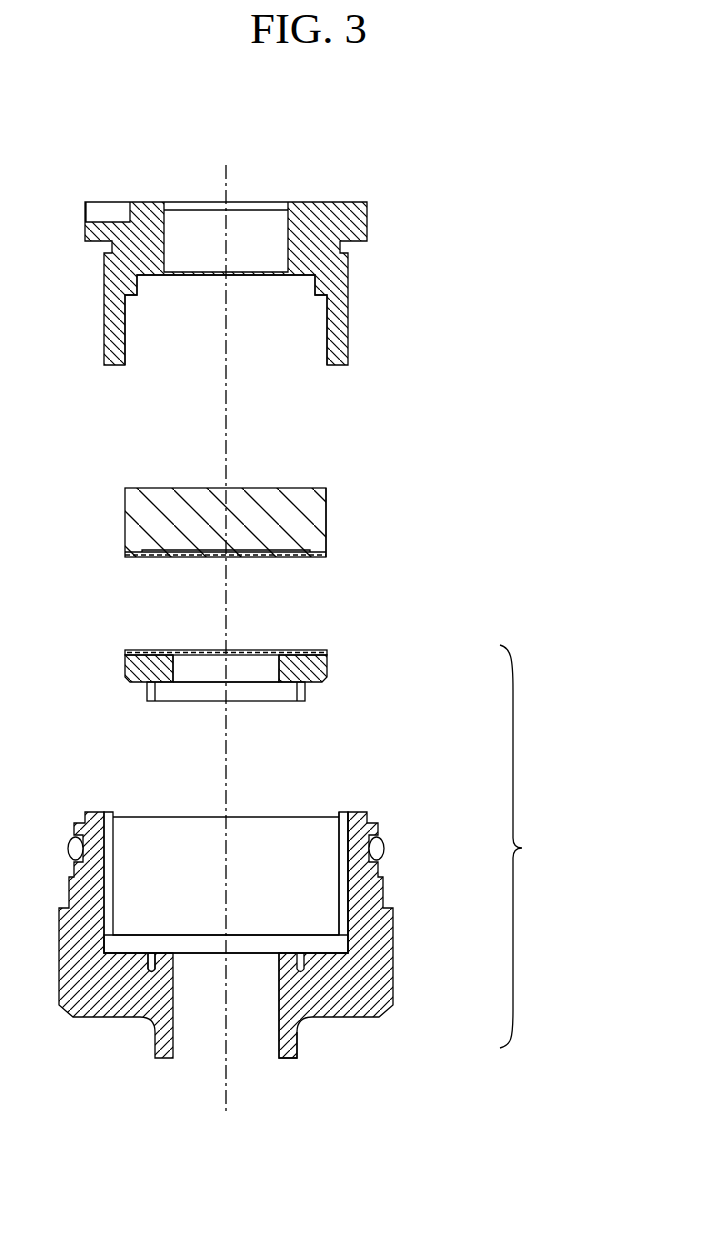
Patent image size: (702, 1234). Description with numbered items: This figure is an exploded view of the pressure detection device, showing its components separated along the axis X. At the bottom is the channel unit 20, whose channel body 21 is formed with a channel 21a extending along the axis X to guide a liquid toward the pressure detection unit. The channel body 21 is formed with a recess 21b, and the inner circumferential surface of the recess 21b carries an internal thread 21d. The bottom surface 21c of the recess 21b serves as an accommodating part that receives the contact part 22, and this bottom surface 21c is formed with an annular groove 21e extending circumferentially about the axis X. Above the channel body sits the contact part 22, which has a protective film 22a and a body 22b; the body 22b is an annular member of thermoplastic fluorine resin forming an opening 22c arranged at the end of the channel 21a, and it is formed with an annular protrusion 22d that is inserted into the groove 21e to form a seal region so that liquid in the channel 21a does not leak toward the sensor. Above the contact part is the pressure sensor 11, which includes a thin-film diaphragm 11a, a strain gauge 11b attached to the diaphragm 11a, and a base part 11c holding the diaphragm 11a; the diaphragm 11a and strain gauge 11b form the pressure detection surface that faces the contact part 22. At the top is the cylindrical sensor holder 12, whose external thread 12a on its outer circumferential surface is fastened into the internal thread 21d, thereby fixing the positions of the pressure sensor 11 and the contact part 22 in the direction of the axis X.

The sensor holder 12 is at (367, 212).
The external thread 12a is at (348, 308).
The pressure sensor 11 is at (247, 512).
The diaphragm 11a is at (257, 557).
The strain gauge 11b is at (160, 550).
The base part 11c is at (326, 520).
The channel unit 20 is at (306, 822).
The contact part 22 is at (245, 666).
The protective film 22a is at (258, 657).
The body 22b is at (327, 662).
The opening 22c is at (160, 671).
The protrusion 22d is at (305, 692).
The channel body 21 is at (393, 968).
The channel 21a is at (272, 1040).
The recess 21b is at (302, 820).
The bottom surface 21c is at (132, 953).
The internal thread 21d is at (348, 898).
The annular groove 21e is at (155, 965).
The axis X is at (227, 1093).